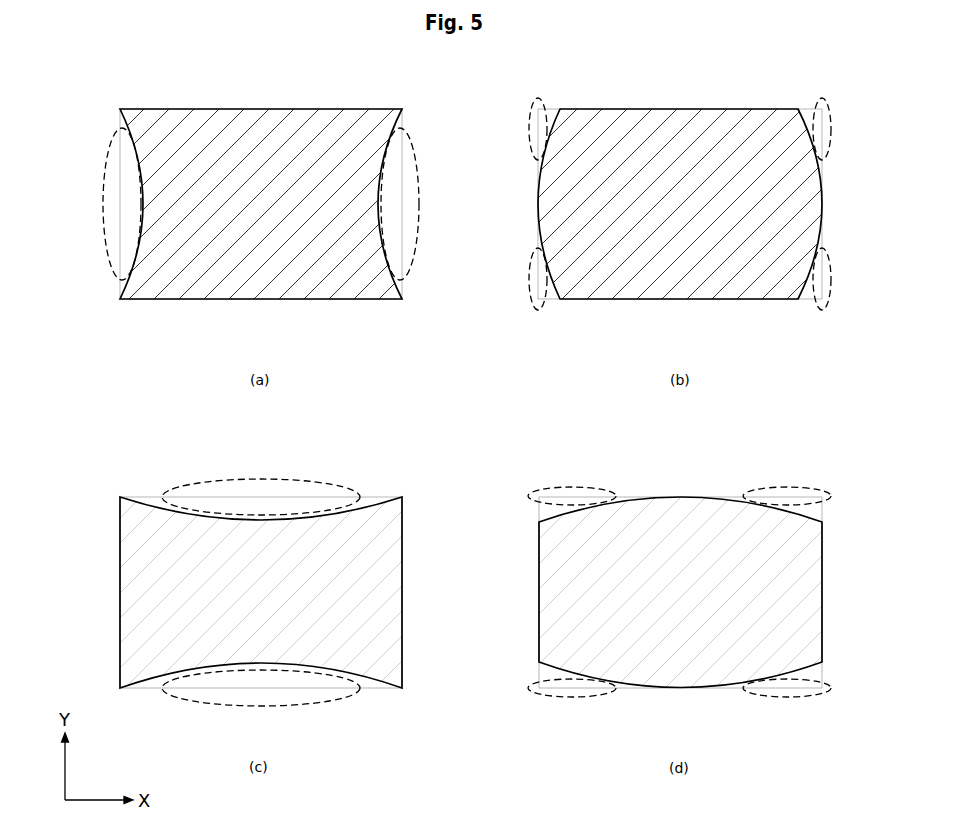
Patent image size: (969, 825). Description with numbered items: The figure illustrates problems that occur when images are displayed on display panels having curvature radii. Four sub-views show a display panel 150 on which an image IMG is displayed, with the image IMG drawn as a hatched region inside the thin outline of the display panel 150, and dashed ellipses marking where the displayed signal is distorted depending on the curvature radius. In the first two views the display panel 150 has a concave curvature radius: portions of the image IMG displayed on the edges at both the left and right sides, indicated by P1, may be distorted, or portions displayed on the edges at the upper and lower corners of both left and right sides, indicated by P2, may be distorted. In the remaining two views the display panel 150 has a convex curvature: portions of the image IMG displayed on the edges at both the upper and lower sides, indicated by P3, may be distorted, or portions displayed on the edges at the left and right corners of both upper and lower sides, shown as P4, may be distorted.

The display panel 150 is at (372, 300).
The image IMG is at (340, 108).
The distorted edge portions at left and right sides P1 is at (96, 244).
The distorted portions at upper and lower corners of left and right sides P2 is at (518, 156).
The distorted edge portions at upper and lower sides P3 is at (312, 480).
The distorted portions at left and right corners of upper and lower sides P4 is at (754, 479).